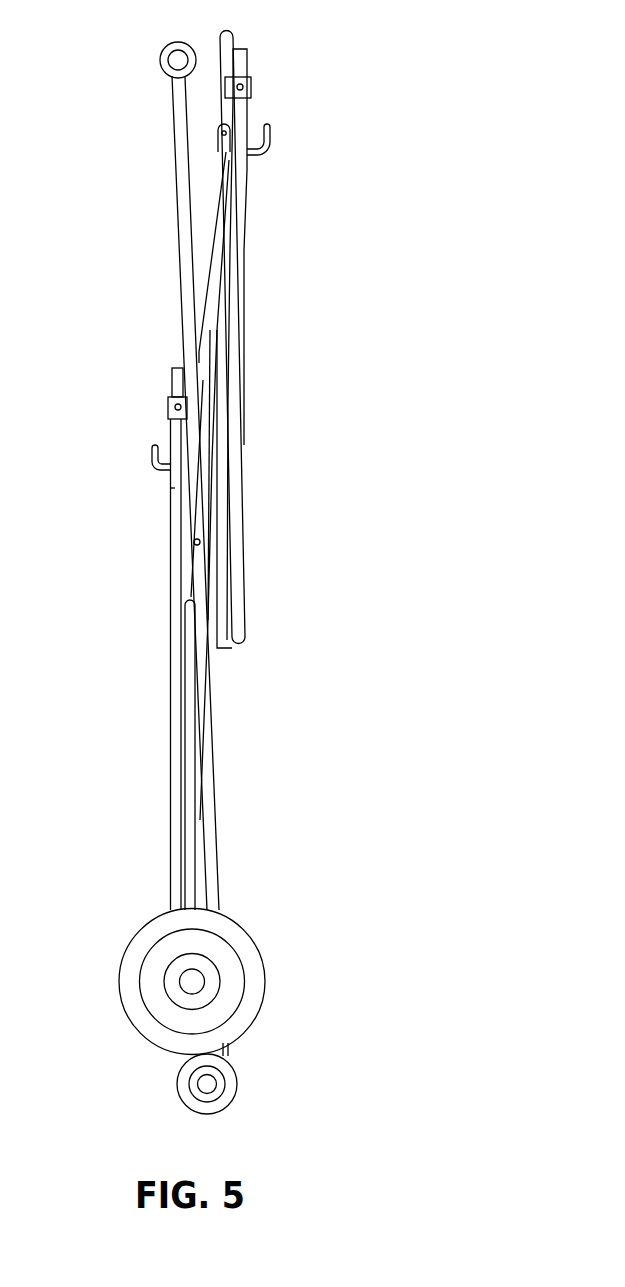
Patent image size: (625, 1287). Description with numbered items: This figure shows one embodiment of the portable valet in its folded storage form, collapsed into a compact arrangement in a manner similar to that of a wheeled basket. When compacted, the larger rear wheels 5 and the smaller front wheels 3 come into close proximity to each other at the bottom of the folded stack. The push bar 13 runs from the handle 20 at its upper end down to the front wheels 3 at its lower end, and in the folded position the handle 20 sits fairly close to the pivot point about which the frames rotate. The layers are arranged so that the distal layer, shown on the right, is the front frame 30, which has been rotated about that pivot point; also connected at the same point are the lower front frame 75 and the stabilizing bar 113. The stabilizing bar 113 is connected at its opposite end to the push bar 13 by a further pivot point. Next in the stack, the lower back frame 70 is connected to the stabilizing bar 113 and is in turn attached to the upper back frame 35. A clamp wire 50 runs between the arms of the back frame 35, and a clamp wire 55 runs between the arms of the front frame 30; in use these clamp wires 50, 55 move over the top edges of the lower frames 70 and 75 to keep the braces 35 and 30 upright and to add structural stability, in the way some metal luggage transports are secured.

The wheels 3 is at (238, 1082).
The wheels 5 is at (119, 990).
The push bar 13 is at (178, 208).
The handles 20 is at (160, 61).
The front frame 30 is at (247, 208).
The back frame 35 is at (170, 628).
The clamp wire 50 is at (152, 448).
The clamp wire 55 is at (267, 137).
The back frame 70 is at (190, 782).
The front frame 75 is at (222, 570).
The stabilizing bar 113 is at (218, 292).